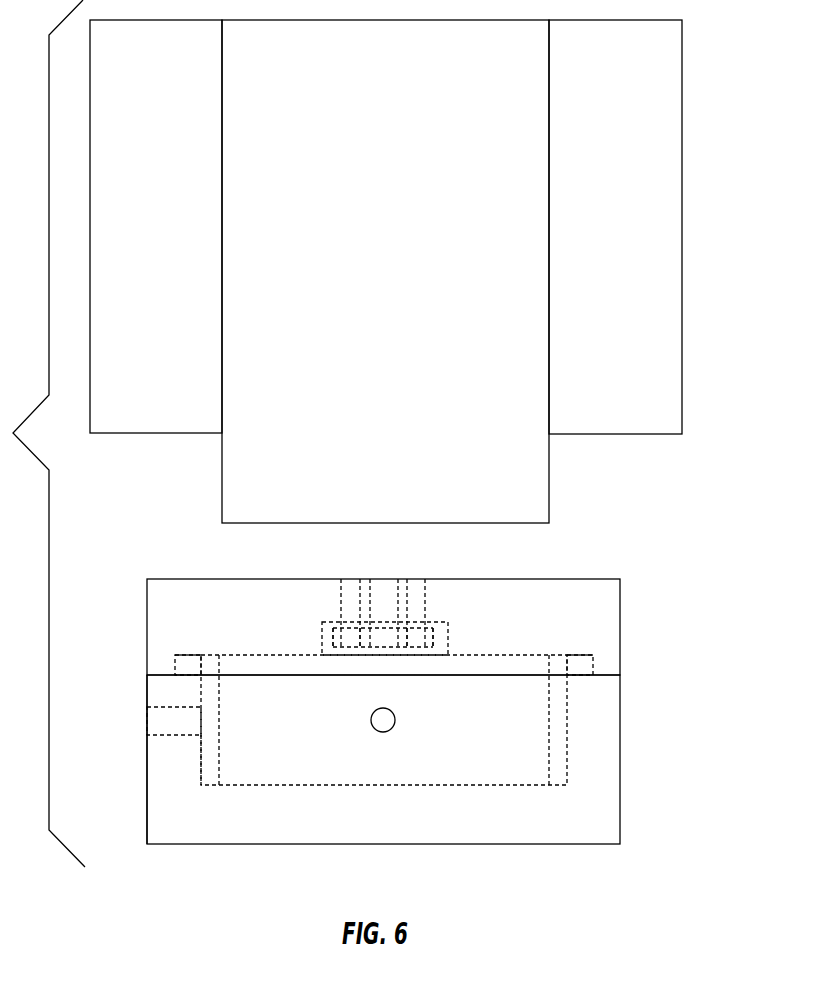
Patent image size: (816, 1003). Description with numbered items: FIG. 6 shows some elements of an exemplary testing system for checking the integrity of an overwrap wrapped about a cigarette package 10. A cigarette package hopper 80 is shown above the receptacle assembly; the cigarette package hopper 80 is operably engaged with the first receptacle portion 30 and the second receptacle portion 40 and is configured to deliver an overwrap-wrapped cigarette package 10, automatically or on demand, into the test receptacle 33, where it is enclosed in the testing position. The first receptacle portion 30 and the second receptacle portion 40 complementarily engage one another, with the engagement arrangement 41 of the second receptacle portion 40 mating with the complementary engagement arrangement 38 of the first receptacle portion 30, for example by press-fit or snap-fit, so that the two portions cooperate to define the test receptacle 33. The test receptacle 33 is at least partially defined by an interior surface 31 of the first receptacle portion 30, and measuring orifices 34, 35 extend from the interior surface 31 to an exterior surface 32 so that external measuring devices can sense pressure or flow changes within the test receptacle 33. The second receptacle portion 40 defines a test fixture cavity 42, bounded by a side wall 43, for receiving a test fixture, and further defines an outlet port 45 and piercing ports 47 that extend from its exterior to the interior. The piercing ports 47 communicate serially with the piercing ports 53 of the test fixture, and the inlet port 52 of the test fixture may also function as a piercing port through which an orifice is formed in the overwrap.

The cigarette package hopper 80 is at (695, 255).
The second receptacle portion 40 is at (600, 578).
The first receptacle portion 30 is at (197, 846).
The exterior surface 32 is at (147, 760).
The cigarette package 10 is at (528, 748).
The interior surface 31 is at (202, 745).
The test receptacle 33 is at (207, 772).
The measuring orifice 35 is at (157, 721).
The complementary engagement arrangement 38 is at (180, 660).
The engagement arrangement 41 is at (173, 653).
The measuring orifice 34 is at (375, 738).
The side wall 43 is at (322, 648).
The test fixture cavity 42 is at (322, 622).
The piercing port 47 is at (348, 588).
The outlet port 45 is at (385, 602).
The inlet port 52 is at (388, 640).
The piercing port 53 is at (350, 633).